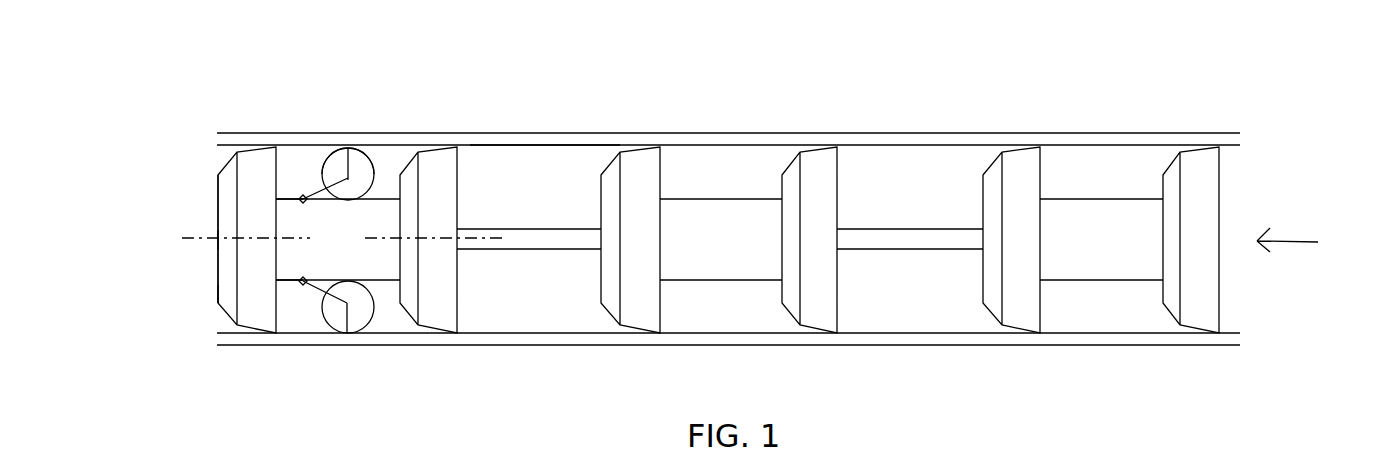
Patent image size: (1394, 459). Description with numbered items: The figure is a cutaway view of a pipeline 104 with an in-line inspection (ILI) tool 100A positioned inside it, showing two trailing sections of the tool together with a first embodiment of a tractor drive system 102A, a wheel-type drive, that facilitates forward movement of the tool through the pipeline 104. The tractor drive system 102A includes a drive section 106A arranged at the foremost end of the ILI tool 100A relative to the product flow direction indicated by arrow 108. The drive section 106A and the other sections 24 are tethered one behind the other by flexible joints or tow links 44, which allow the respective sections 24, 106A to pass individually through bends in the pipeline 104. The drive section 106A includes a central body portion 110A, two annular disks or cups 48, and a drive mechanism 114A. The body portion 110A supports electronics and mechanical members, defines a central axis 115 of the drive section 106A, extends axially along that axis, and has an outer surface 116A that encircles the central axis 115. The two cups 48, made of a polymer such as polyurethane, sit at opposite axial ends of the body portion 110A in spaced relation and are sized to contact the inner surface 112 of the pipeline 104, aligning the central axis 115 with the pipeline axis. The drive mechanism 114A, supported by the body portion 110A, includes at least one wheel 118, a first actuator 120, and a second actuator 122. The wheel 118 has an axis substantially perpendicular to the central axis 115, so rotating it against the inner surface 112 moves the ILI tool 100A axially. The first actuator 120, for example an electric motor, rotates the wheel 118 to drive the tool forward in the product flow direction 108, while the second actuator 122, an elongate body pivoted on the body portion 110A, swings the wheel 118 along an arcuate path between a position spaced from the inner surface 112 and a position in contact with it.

The ILI tool 100A is at (177, 136).
The tractor drive system 102A is at (192, 290).
The pipeline 104 is at (1113, 345).
The drive section 106A is at (209, 243).
The arrow indicating product flow direction 108 is at (1317, 241).
The central body portion 110A is at (300, 192).
The inner surface 112 is at (547, 150).
The drive mechanism 114A is at (320, 178).
The central axis 115 is at (198, 240).
The outer surface 116A is at (338, 239).
The wheel 118 is at (377, 148).
The first actuator 120 is at (348, 148).
The second actuator 122 is at (316, 162).
The other sections 24 is at (720, 157).
The tow links 44 is at (522, 250).
The annular disks or cups 48 is at (405, 160).